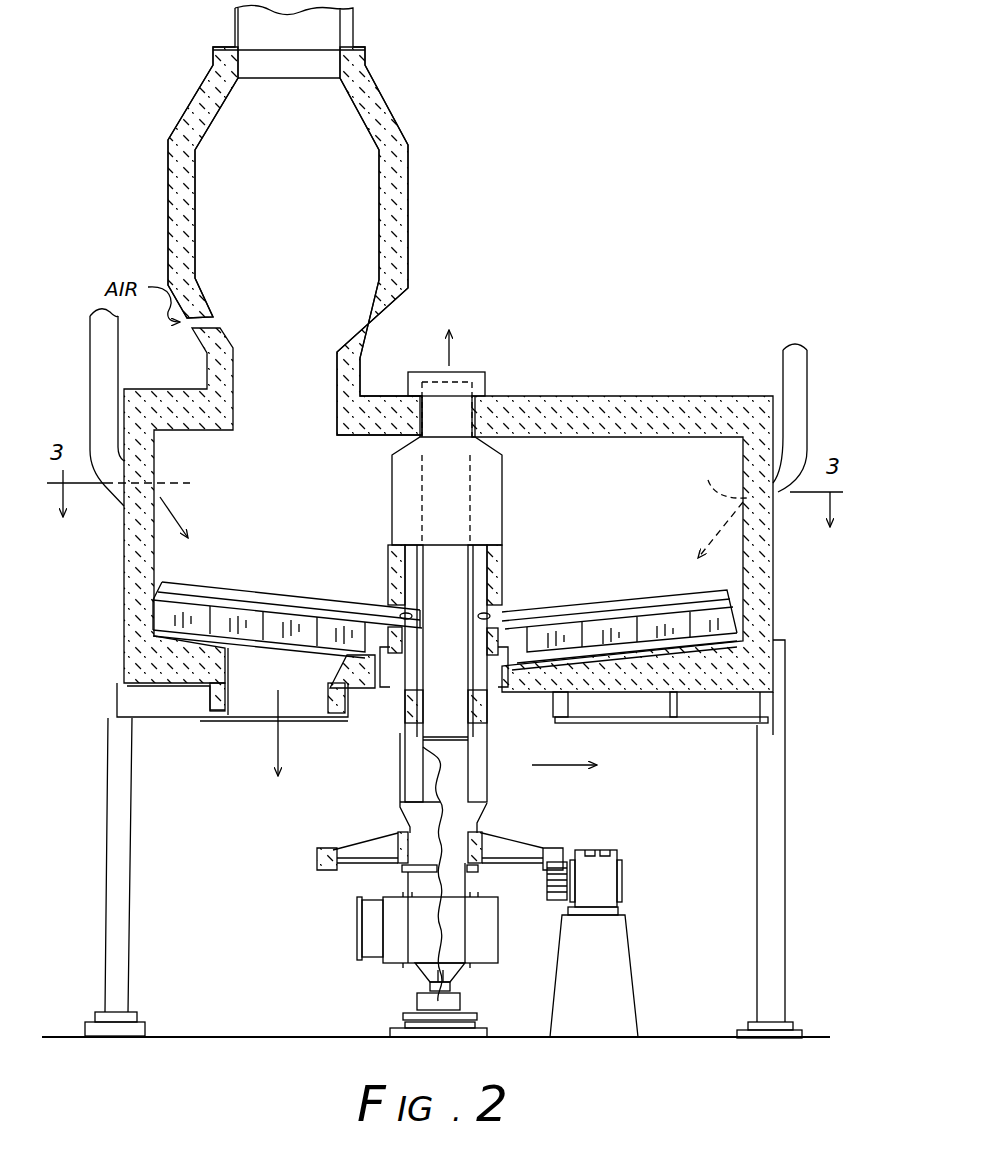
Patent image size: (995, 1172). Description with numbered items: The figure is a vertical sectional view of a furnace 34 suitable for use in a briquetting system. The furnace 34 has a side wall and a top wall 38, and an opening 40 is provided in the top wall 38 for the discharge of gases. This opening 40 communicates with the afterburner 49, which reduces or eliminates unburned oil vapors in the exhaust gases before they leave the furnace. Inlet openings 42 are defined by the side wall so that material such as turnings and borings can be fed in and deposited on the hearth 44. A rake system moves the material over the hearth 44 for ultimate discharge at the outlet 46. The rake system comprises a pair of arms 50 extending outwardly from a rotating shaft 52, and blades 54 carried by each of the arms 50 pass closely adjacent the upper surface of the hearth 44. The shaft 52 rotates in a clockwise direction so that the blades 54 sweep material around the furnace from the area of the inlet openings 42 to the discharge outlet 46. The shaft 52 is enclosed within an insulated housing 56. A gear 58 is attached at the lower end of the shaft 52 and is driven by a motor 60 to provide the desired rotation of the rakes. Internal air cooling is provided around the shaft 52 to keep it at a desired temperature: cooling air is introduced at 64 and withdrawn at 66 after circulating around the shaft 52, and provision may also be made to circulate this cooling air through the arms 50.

The furnace 34 is at (470, 305).
The top wall 38 is at (137, 543).
The opening 40 is at (292, 405).
The inlet openings 42 is at (426, 508).
The hearth 44 is at (615, 658).
The outlet 46 is at (262, 700).
The afterburner 49 is at (187, 210).
The arms 50 is at (282, 607).
The rotating shaft 52 is at (392, 577).
The blades 54 is at (195, 620).
The insulated housing 56 is at (493, 493).
The gear 58 is at (333, 868).
The motor 60 is at (598, 883).
The air inlet 64 is at (357, 938).
The air outlet 66 is at (467, 358).